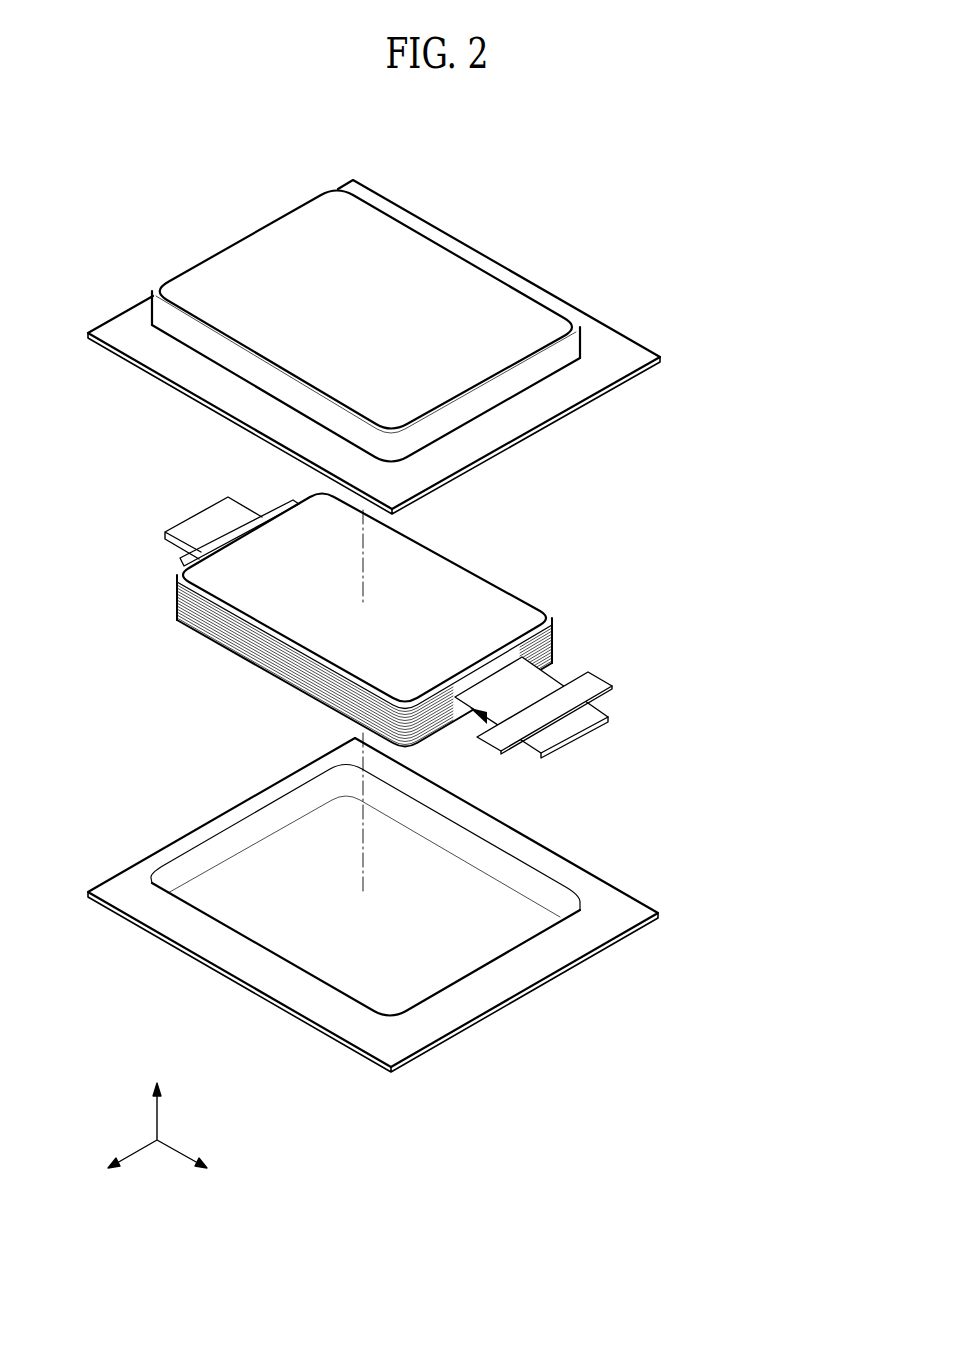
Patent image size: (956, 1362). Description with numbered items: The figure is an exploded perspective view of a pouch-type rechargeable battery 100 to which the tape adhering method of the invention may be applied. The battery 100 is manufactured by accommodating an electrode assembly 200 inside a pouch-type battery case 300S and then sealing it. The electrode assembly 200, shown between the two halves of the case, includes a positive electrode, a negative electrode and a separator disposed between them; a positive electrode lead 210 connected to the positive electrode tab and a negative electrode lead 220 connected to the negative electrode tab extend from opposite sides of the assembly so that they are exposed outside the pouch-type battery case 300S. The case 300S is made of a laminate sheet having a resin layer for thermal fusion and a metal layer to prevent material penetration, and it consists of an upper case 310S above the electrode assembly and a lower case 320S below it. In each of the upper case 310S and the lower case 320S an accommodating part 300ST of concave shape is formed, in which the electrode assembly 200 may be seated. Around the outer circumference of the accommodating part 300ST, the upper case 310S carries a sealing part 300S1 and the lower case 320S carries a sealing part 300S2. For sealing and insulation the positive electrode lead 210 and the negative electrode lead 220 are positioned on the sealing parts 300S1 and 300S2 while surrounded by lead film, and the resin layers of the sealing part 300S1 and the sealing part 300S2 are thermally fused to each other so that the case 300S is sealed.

The pouch-type rechargeable battery 100 is at (195, 154).
The electrode assembly 200 is at (367, 609).
The positive electrode lead 210 is at (596, 712).
The negative electrode lead 220 is at (213, 520).
The pouch-type battery case 300S is at (758, 537).
The upper case 310S is at (406, 371).
The lower case 320S is at (412, 896).
The accommodating part 300ST is at (440, 270).
The sealing part of the upper case 300S1 is at (176, 365).
The sealing part of the lower case 300S2 is at (190, 926).